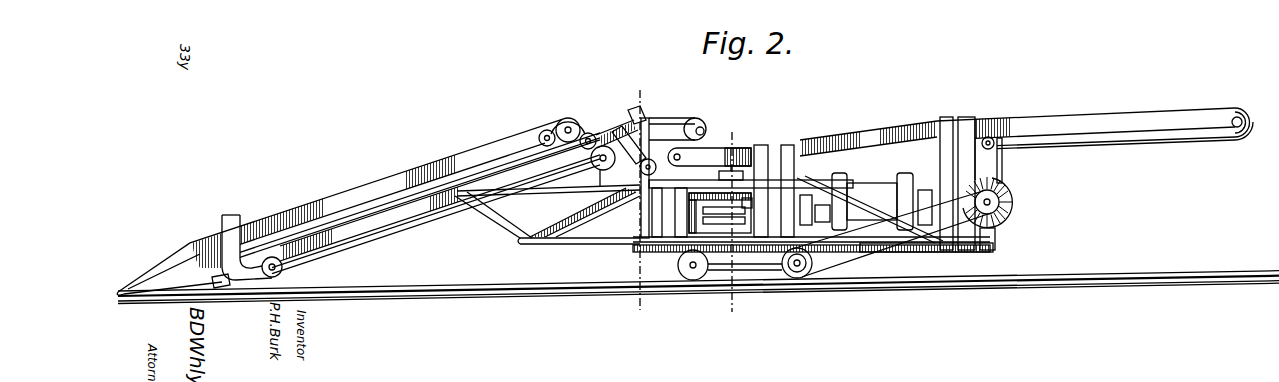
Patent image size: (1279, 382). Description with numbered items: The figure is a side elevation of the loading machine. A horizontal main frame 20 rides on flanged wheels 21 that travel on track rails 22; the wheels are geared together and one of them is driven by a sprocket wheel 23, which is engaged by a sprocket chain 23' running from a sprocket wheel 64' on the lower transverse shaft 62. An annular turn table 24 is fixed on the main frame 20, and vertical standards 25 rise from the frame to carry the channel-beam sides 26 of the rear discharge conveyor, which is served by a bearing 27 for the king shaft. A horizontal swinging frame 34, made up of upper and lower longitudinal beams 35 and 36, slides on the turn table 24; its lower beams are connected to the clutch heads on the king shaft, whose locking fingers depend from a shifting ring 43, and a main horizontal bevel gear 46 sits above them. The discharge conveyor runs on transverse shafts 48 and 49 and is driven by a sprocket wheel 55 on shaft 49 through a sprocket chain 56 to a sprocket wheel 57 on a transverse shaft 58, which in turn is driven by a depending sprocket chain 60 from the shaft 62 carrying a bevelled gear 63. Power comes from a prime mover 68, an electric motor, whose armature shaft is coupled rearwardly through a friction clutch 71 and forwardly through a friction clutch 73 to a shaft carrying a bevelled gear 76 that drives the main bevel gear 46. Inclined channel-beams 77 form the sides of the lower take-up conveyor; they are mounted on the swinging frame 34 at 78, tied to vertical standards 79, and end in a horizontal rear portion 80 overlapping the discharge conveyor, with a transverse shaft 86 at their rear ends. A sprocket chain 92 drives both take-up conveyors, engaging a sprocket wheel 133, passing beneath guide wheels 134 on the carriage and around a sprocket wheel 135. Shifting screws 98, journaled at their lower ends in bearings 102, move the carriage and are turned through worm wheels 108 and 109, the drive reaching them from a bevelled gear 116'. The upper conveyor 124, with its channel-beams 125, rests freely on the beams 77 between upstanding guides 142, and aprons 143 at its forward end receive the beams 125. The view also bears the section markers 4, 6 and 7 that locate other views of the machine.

The roller 4 is at (565, 99).
The section line 6 is at (730, 222).
The section line 7 is at (636, 199).
The main frame 20 is at (928, 254).
The wheels 21 is at (784, 264).
The track rails 22 is at (674, 271).
The sprocket wheel 23 is at (797, 277).
The sprocket chain 23' is at (891, 234).
The annular turn table 24 is at (648, 249).
The vertical standards 25 is at (800, 176).
The sides of discharge conveyor 26 is at (1078, 124).
The bearing 27 is at (736, 171).
The horizontal swinging frame 34 is at (548, 246).
The upper longitudinal beams 35 is at (556, 196).
The lower longitudinal beams 36 is at (572, 241).
The shifting ring 43 is at (768, 191).
The main horizontal bevel gear 46 is at (710, 194).
The transverse shaft 48 is at (709, 157).
The transverse shaft 49 is at (1240, 106).
The sprocket wheel 55 is at (1246, 136).
The sprocket chain 56 is at (1128, 148).
The sprocket wheel 57 is at (994, 136).
The transverse shaft 58 is at (990, 152).
The depending sprocket chain 60 is at (1003, 164).
The lower transverse shaft 62 is at (1010, 194).
The bevelled gear 63 is at (1012, 214).
The sprocket wheel 64' is at (1006, 238).
The prime mover 68 is at (882, 182).
The friction clutch 71 is at (928, 196).
The friction clutch 73 is at (824, 217).
The bevelled gear 76 is at (797, 212).
The inclined channel-beams 77 is at (374, 241).
The mounting point 78 is at (482, 220).
The vertical standards 79 is at (649, 124).
The horizontal rear end 80 is at (692, 116).
The transverse shaft 86 is at (708, 127).
The sprocket chain 92 is at (350, 253).
The shifting screws 98 is at (618, 118).
The bearing 102 is at (226, 296).
The worm wheels 108 is at (644, 145).
The worm wheels 109 is at (652, 172).
The bevelled gear 116' is at (585, 212).
The upper conveyor 124 is at (386, 180).
The channel-beams 125 is at (292, 220).
The sprocket wheel 133 is at (570, 118).
The guide wheels 134 is at (539, 136).
The sprocket wheel 135 is at (598, 190).
The upstanding guides 142 is at (222, 218).
The aprons 143 is at (164, 262).